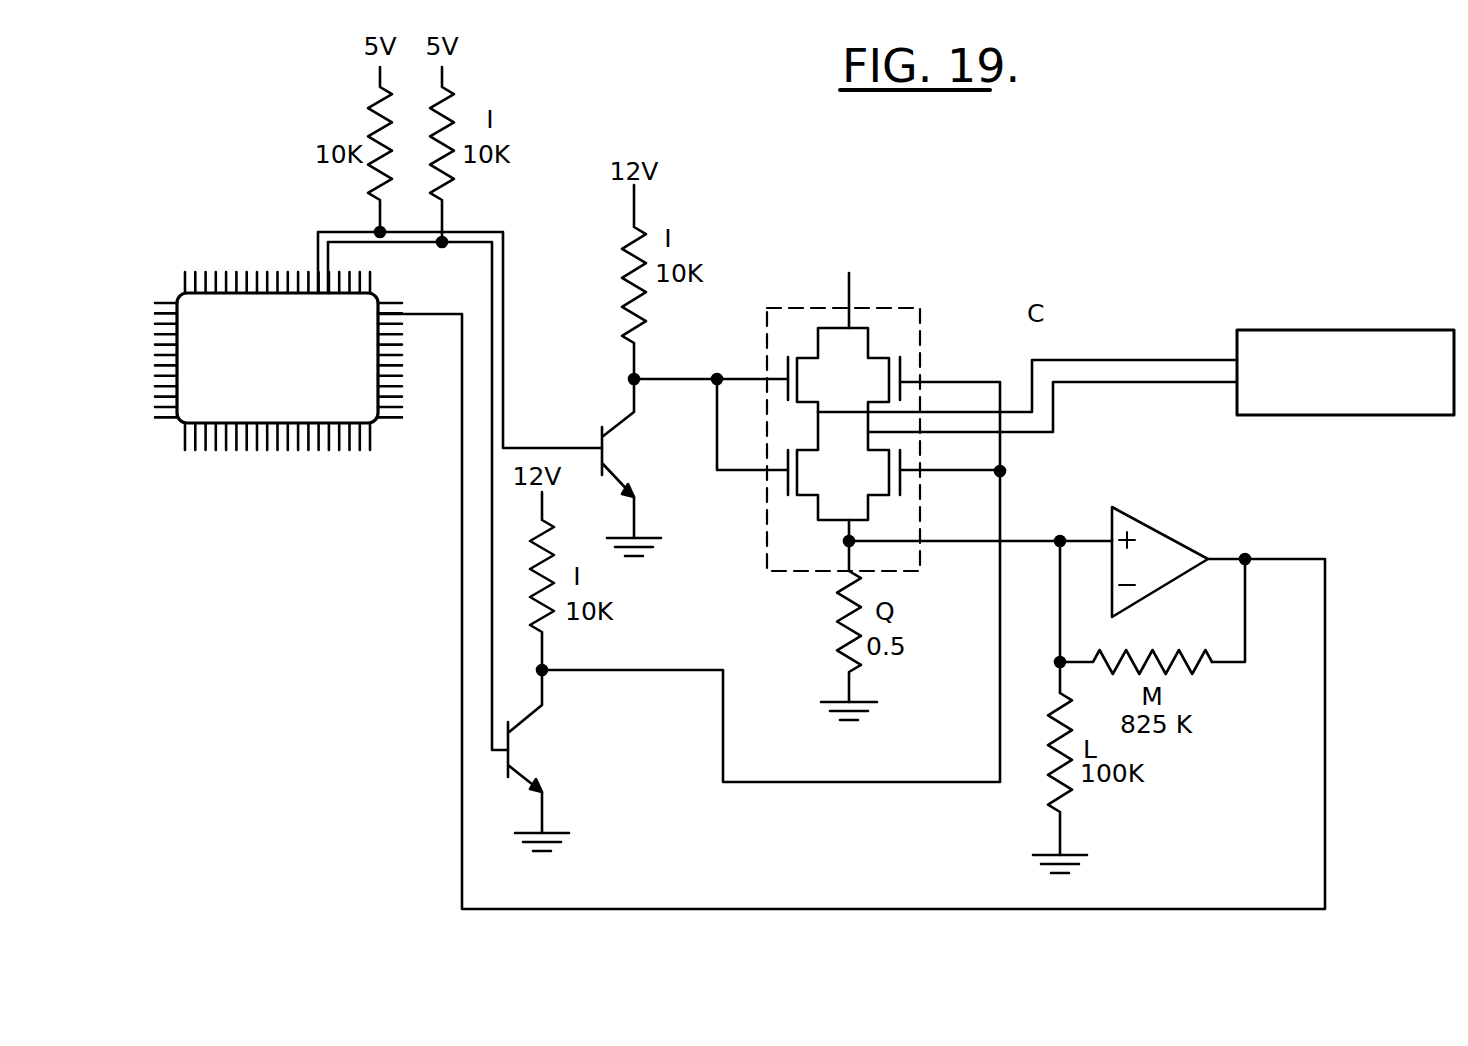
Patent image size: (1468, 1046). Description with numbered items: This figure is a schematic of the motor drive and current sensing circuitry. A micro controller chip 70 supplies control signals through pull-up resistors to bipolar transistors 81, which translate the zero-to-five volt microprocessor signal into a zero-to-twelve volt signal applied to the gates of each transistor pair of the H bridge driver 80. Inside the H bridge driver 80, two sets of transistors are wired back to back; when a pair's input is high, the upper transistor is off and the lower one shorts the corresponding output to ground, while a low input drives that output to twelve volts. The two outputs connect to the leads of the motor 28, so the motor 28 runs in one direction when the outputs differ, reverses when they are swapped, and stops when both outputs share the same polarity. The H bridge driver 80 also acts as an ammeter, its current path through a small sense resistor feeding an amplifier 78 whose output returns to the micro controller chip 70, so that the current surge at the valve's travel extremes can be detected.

The micro controller chip 70 is at (253, 379).
The transistors 81 is at (600, 437).
The H bridge driver 80 is at (885, 308).
The motor 28 is at (1325, 330).
The operational amplifier 78 is at (1183, 541).